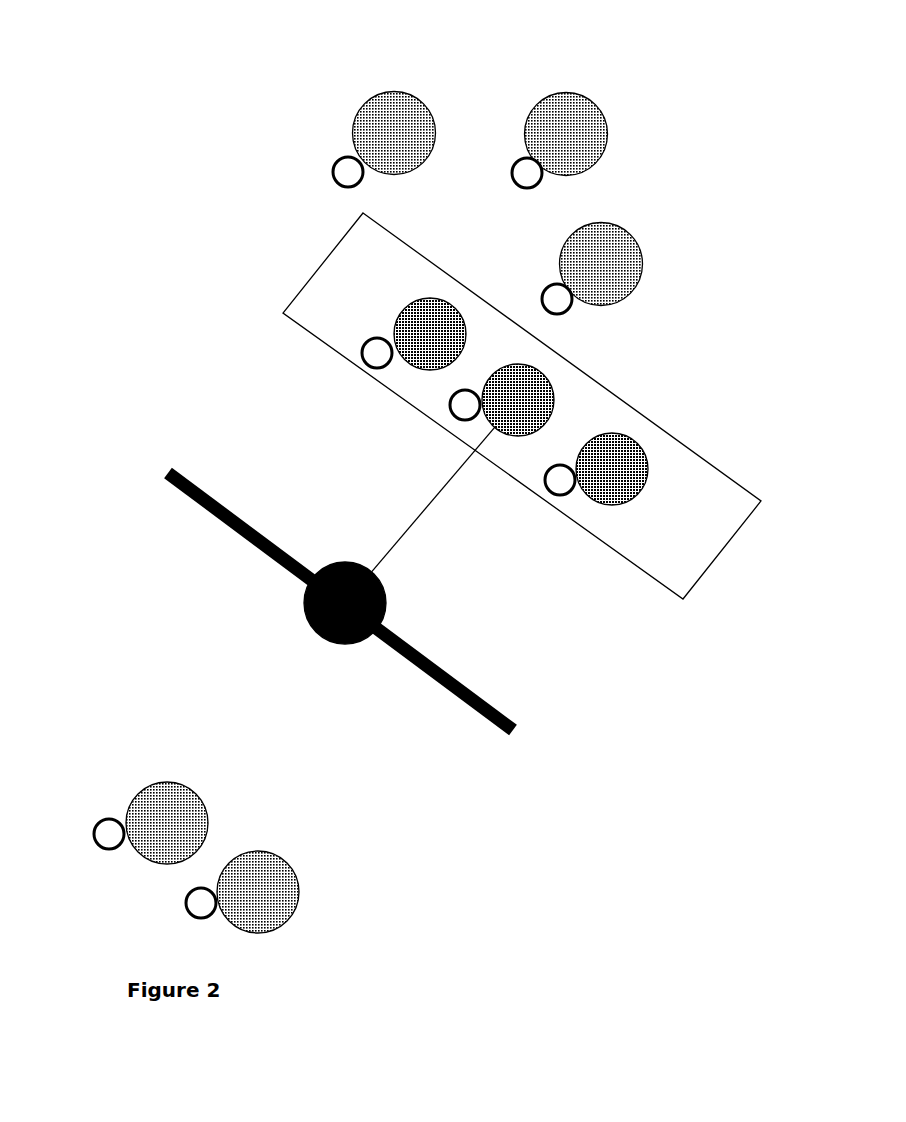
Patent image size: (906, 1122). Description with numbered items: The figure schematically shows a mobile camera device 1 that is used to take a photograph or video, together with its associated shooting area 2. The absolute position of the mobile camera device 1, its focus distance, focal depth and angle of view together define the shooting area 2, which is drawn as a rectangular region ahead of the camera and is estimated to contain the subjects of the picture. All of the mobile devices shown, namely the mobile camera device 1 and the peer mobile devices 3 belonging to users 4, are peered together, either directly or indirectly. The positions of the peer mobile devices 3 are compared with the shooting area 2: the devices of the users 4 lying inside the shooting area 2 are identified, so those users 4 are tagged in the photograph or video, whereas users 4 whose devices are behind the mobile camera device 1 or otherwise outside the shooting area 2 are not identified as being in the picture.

The mobile camera device 1 is at (330, 653).
The shooting area 2 is at (688, 600).
The peer mobile devices 3 is at (332, 150).
The users 4 is at (395, 78).